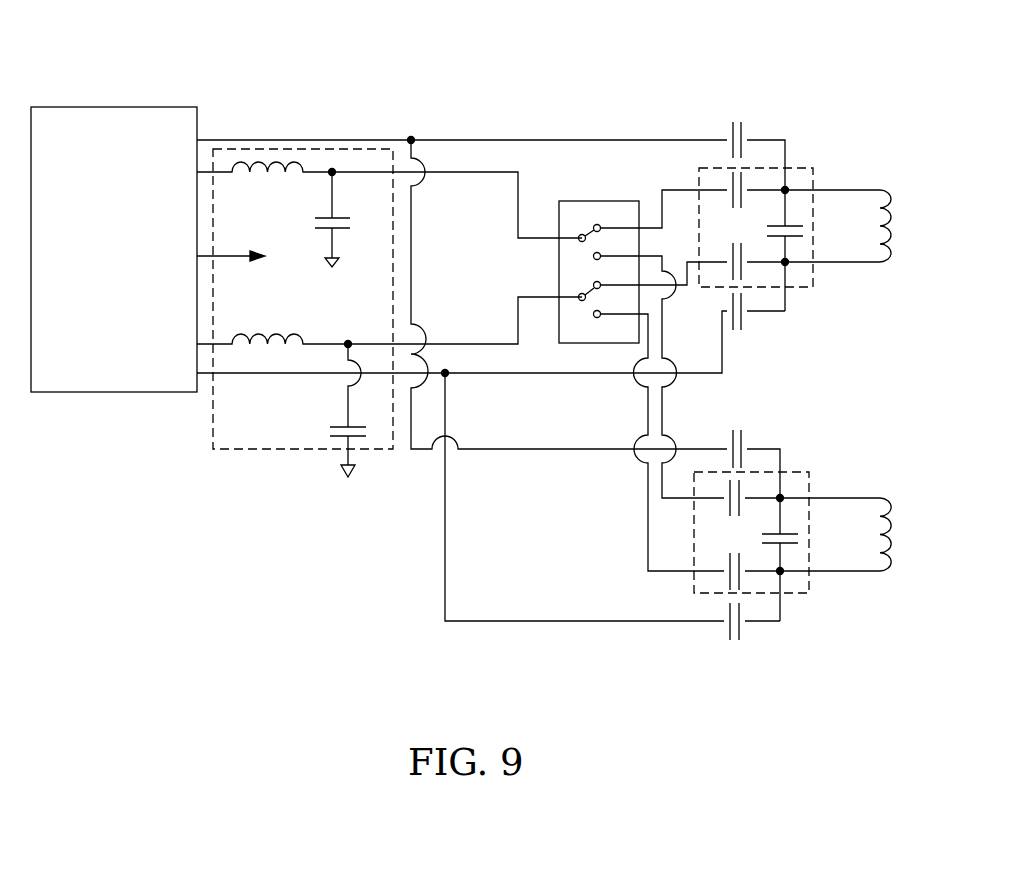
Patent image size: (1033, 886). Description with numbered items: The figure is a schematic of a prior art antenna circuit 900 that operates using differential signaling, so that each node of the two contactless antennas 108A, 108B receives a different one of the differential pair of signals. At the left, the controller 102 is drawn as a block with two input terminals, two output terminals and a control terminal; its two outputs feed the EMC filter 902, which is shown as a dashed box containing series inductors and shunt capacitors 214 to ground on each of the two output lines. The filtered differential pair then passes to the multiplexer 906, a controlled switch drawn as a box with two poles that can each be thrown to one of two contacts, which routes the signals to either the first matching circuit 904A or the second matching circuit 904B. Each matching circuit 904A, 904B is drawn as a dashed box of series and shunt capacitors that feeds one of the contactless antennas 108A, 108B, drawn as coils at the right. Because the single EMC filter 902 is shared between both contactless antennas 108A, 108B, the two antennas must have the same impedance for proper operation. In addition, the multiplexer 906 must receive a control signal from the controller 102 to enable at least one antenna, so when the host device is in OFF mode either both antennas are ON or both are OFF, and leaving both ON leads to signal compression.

The antenna circuit 900 is at (195, 57).
The controller 102 is at (90, 393).
The EMC filter 902 is at (381, 332).
The capacitor 214 is at (338, 262).
The multiplexer 906 is at (609, 201).
The matching circuit 904A is at (813, 168).
The matching circuit 904B is at (809, 472).
The contactless antenna 108A is at (893, 233).
The contactless antenna 108B is at (892, 540).